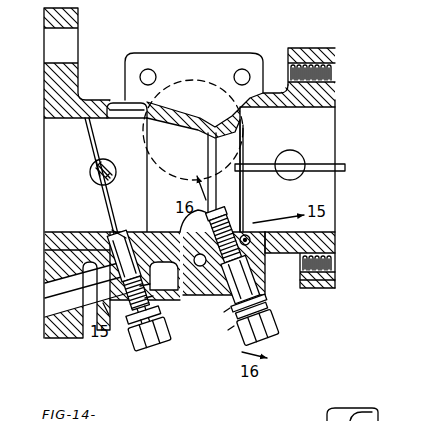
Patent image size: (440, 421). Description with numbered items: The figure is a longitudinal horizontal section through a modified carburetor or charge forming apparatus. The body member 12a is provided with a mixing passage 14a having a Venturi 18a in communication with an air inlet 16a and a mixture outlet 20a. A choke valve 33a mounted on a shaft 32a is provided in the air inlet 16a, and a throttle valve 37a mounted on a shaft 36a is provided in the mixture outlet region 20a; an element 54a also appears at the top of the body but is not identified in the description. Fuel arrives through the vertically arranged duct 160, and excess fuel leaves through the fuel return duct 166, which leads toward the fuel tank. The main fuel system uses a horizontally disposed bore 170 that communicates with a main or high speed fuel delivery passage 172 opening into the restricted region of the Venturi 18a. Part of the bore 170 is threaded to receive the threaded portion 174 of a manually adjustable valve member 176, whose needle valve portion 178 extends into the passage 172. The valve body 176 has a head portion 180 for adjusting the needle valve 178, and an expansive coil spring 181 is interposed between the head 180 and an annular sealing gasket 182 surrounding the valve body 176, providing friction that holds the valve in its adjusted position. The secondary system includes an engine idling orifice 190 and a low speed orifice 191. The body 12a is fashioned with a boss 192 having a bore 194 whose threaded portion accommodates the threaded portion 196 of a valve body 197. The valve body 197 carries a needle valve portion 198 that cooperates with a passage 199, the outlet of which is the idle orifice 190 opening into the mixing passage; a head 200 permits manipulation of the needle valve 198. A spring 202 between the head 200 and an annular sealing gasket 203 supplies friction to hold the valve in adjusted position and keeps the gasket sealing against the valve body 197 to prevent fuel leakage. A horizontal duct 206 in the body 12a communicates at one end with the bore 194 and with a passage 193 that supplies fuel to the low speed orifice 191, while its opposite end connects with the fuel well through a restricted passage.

The body member 12a is at (167, 105).
The mixing passage 14a is at (180, 149).
The air inlet 16a is at (336, 124).
The Venturi 18a is at (233, 137).
The mixture outlet 20a is at (44, 137).
The shaft 32a is at (282, 156).
The choke valve 33a is at (320, 164).
The shaft 36a is at (91, 165).
The throttle valve 37a is at (106, 198).
The mounting bracket 54a is at (247, 52).
The vertically arranged passage or duct 160 is at (258, 257).
The fuel return duct 166 is at (187, 271).
The horizontally disposed bore 170 is at (236, 228).
The main or high speed fuel delivery orifice or passage 172 is at (238, 263).
The threaded portion 174 is at (256, 281).
The manually adjustable valve member 176 is at (250, 306).
The needle valve portion 178 is at (217, 214).
The head portion 180 is at (257, 327).
The expansive coil spring 181 is at (228, 332).
The annular sealing gasket 182 is at (224, 314).
The engine idling orifice 190 is at (114, 283).
The low speed orifice 191 is at (128, 230).
The boss 192 is at (108, 288).
The passage 193 is at (119, 180).
The bore 194 is at (100, 304).
The threaded portion 196 is at (148, 294).
The valve body 197 is at (136, 293).
The needle valve portion 198 is at (52, 275).
The passage 199 is at (52, 253).
The head 200 is at (143, 315).
The spring 202 is at (150, 334).
The annular sealing gasket 203 is at (155, 303).
The duct or passage 206 is at (180, 225).